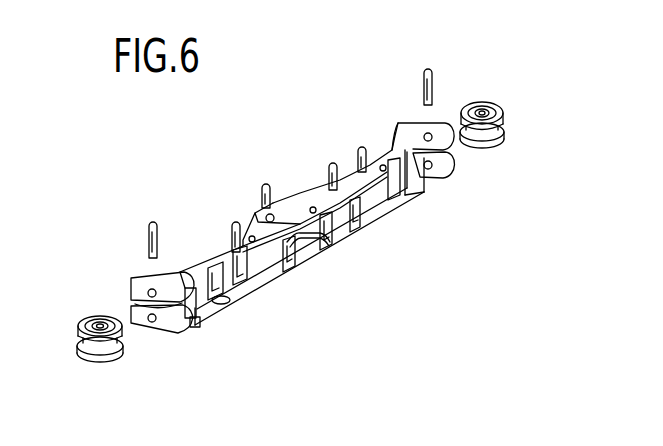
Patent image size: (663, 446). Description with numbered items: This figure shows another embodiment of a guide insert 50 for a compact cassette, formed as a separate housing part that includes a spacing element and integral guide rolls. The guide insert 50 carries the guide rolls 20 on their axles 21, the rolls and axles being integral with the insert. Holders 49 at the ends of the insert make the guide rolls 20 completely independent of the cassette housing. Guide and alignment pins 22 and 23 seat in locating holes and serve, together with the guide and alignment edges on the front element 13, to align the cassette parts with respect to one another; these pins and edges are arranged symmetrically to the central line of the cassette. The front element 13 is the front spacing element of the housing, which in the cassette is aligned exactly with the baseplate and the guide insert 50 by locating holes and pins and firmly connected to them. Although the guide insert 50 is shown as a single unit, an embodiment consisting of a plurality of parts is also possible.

The front element 13 is at (289, 216).
The guide rolls 20 is at (106, 350).
The axles 21 is at (154, 240).
The guide and alignment pin 22 is at (232, 240).
The guide and alignment pin 23 is at (264, 196).
The holders 49 is at (175, 325).
The guide insert 50 is at (315, 250).